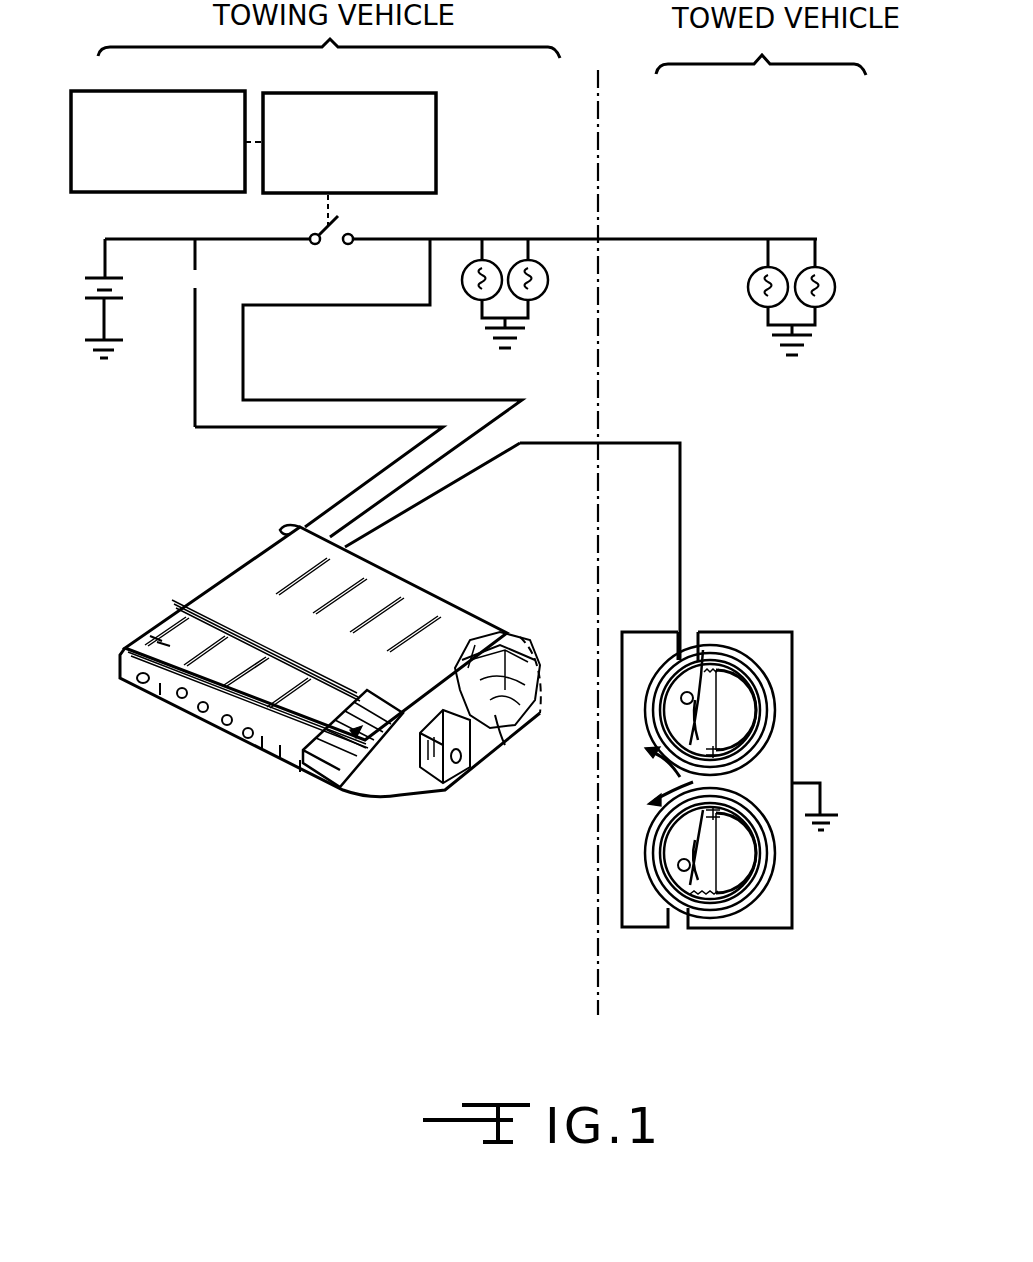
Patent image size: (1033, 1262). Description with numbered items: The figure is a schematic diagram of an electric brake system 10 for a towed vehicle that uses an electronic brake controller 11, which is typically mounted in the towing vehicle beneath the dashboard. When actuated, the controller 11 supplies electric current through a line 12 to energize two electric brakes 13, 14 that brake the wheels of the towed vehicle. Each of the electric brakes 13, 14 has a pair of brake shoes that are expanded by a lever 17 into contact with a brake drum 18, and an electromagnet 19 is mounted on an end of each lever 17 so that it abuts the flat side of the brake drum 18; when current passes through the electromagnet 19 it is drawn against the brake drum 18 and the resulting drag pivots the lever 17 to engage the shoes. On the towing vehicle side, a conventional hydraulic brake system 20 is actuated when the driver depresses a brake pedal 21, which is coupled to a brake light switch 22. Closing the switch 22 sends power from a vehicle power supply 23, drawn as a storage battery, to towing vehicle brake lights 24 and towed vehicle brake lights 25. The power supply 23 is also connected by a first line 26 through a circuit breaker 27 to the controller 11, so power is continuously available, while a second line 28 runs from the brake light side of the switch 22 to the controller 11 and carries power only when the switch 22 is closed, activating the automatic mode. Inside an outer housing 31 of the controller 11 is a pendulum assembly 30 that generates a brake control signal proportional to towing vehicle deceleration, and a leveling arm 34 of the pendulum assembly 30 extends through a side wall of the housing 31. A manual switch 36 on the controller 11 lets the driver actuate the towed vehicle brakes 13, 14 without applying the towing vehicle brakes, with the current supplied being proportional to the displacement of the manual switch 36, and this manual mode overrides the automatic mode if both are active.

The electric brake system 10 is at (752, 170).
The electronic brake controller 11 is at (340, 659).
The line 12 is at (528, 441).
The electric brake 13 is at (737, 780).
The electric brake 14 is at (747, 859).
The lever 17 is at (705, 718).
The brake drum 18 is at (650, 818).
The electromagnet 19 is at (694, 697).
The hydraulic brake system 20 is at (178, 193).
The brake pedal 21 is at (437, 146).
The brake light switch 22 is at (334, 246).
The vehicle power supply 23 is at (90, 298).
The towing vehicle brake light 24 is at (470, 298).
The towed vehicle brake light 25 is at (746, 284).
The first line 26 is at (193, 393).
The circuit breaker 27 is at (187, 272).
The second line 28 is at (244, 338).
The pendulum assembly 30 is at (503, 632).
The outer housing 31 is at (440, 605).
The leveling arm 34 is at (505, 738).
The manual switch 36 is at (320, 778).